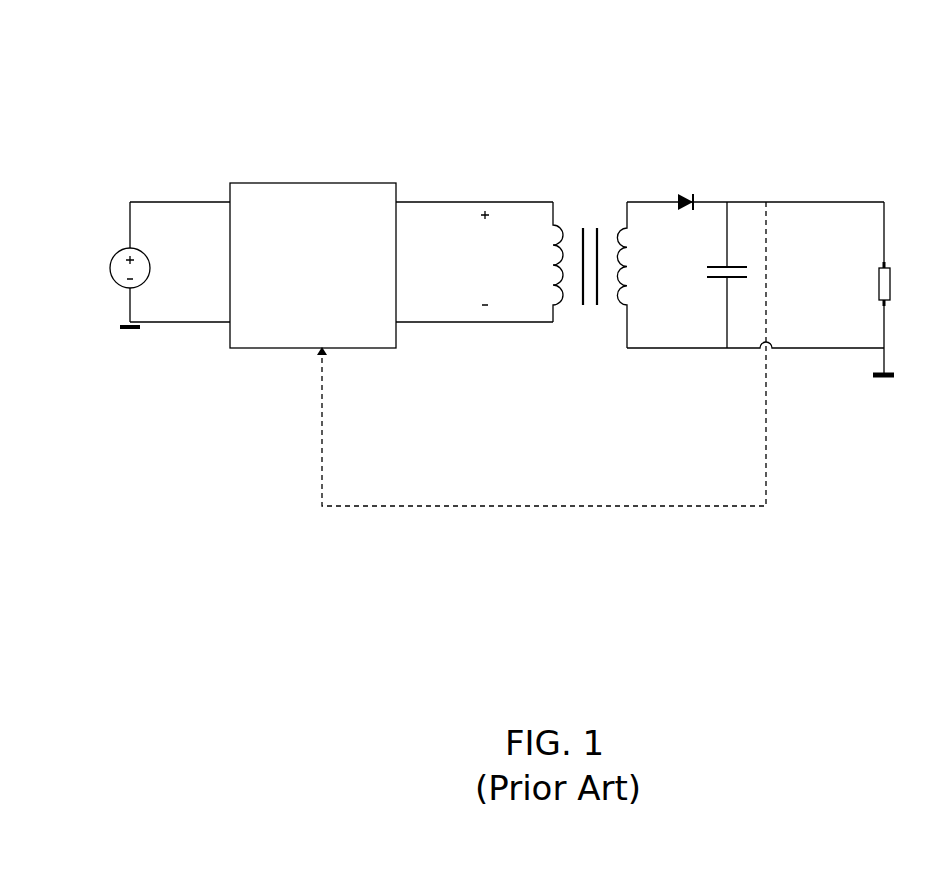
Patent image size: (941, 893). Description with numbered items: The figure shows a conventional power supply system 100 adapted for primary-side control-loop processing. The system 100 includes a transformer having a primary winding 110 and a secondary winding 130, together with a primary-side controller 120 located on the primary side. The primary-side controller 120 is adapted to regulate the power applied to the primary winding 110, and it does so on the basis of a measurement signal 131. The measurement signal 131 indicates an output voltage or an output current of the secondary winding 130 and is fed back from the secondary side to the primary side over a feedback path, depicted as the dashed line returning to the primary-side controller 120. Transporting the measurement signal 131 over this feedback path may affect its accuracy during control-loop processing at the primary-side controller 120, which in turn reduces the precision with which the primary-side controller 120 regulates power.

The conventional power supply system 100 is at (792, 78).
The primary winding 110 is at (553, 217).
The primary-side controller 120 is at (255, 352).
The secondary winding 130 is at (627, 207).
The measurement signal 131 is at (727, 430).